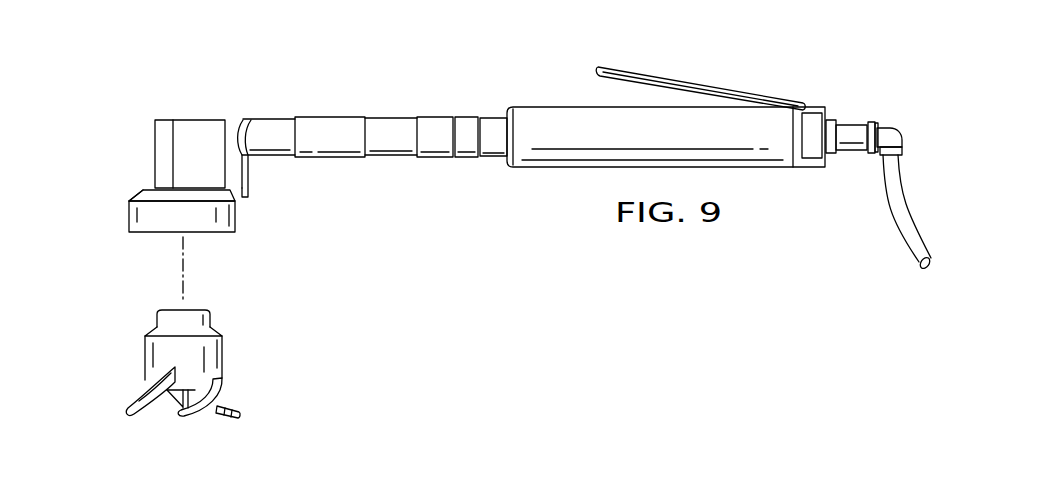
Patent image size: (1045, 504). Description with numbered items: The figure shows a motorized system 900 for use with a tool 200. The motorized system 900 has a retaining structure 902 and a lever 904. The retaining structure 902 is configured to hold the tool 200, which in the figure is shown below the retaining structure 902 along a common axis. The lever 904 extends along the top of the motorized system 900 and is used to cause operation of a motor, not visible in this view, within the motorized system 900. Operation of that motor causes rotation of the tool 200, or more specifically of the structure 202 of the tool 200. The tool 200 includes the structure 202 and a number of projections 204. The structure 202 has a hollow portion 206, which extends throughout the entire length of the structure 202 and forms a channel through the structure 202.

The motorized system 900 is at (326, 92).
The retaining structure 902 is at (158, 234).
The lever 904 is at (702, 83).
The tool 200 is at (115, 364).
The structure 202 is at (213, 353).
The number of projections 204 is at (113, 415).
The hollow portion 206 is at (217, 299).